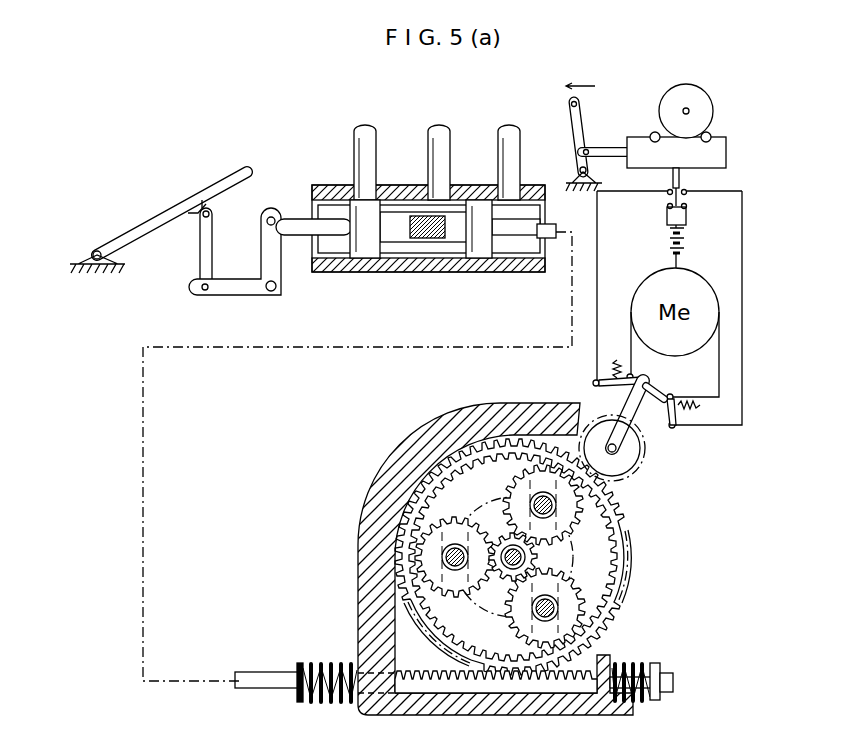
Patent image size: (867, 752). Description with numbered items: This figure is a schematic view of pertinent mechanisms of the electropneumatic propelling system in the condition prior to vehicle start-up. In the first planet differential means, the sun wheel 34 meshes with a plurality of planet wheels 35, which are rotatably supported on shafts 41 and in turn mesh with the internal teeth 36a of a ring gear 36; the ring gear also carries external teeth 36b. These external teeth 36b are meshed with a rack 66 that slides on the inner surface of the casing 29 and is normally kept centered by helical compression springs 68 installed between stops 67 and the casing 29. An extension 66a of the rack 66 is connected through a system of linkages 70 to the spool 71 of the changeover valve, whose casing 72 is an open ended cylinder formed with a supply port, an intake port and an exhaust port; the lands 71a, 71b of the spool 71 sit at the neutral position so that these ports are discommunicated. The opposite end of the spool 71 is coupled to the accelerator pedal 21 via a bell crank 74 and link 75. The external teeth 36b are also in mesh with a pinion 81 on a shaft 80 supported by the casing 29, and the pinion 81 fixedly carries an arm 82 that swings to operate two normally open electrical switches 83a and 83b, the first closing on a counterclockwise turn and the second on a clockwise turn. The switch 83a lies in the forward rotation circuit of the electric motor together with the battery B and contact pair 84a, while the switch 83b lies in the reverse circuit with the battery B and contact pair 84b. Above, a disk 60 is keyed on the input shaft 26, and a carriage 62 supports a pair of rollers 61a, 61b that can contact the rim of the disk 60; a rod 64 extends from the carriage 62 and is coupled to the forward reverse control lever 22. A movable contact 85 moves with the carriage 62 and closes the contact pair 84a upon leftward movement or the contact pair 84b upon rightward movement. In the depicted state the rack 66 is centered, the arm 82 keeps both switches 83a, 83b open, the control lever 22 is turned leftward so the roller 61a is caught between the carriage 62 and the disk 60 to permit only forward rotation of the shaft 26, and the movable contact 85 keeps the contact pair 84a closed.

The accelerator pedal 21 is at (138, 232).
The forward reverse control lever 22 is at (573, 112).
The input shaft 26 is at (684, 109).
The transmission gear casing 29 is at (393, 470).
The sun wheel 34 is at (503, 575).
The planet wheels 35 is at (457, 531).
The ring gear 36 is at (491, 557).
The internal teeth 36a is at (362, 608).
The external teeth 36b is at (614, 620).
The shafts 41 is at (540, 503).
The disk 60 is at (700, 90).
The roller 61a is at (712, 133).
The roller 61b is at (650, 132).
The carriage 62 is at (727, 153).
The rod 64 is at (598, 160).
The rack 66 is at (526, 695).
The extension 66a is at (250, 690).
The stops 67 is at (298, 700).
The helical compression springs 68 is at (335, 703).
The system of linkages 70 is at (150, 513).
The spool 71 is at (416, 236).
The spool land 71a is at (355, 205).
The spool land 71b is at (482, 210).
The valve casing 72 is at (333, 272).
The bell crank 74 is at (232, 292).
The link 75 is at (200, 250).
The shaft 80 is at (626, 458).
The pinion 81 is at (618, 470).
The arm 82 is at (640, 420).
The electrical switch 83a is at (598, 381).
The electrical switch 83b is at (678, 423).
The contact pair 84a is at (668, 197).
The contact pair 84b is at (688, 199).
The movable contact 85 is at (690, 190).
The battery B is at (688, 246).